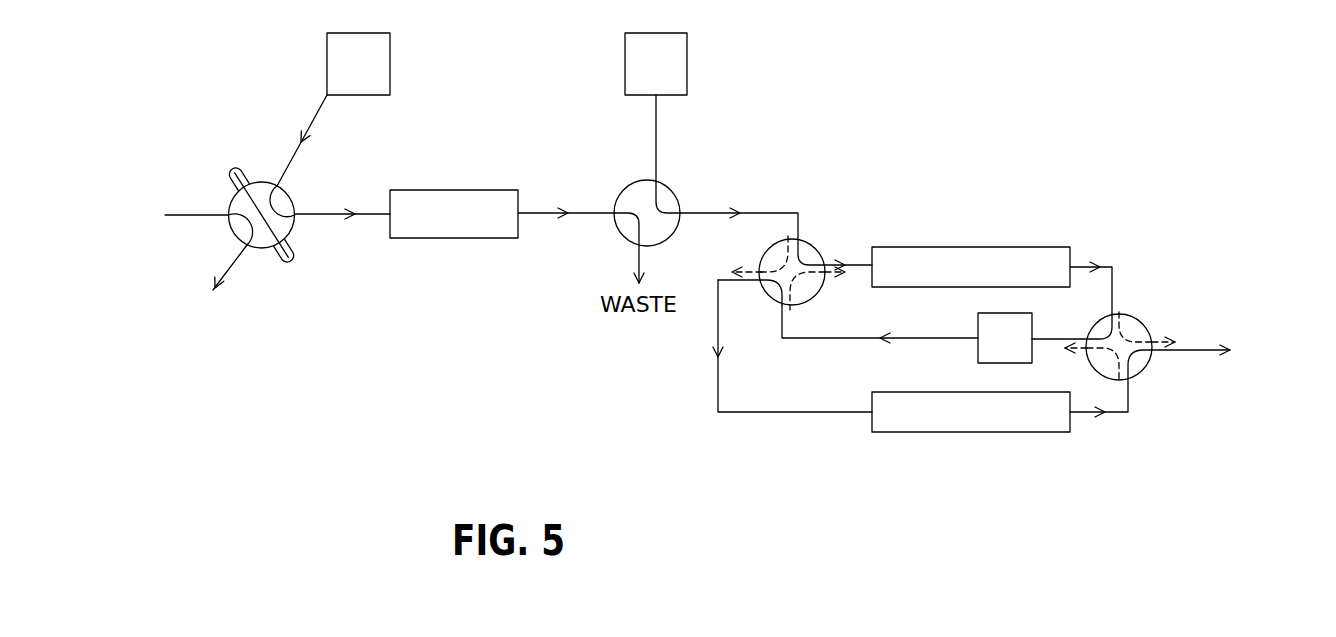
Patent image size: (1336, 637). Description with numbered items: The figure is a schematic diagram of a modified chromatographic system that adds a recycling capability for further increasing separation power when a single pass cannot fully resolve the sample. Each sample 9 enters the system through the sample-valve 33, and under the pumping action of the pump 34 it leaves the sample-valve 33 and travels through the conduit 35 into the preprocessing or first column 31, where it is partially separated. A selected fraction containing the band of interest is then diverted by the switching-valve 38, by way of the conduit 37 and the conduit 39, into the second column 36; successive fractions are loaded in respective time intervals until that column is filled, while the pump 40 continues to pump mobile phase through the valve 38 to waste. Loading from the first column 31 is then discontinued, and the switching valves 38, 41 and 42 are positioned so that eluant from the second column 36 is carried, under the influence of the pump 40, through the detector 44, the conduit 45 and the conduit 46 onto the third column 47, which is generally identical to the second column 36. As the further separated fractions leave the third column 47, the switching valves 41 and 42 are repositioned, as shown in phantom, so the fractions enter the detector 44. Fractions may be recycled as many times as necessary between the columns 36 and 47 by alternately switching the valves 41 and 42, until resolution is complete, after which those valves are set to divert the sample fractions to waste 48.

The sample 9 is at (130, 215).
The first column 31 is at (463, 190).
The sample-valve 33 is at (267, 250).
The pump 34 is at (390, 64).
The conduit 35 is at (373, 213).
The second column 36 is at (975, 247).
The conduit 37 is at (583, 212).
The switching-valve 38 is at (673, 193).
The conduit 39 is at (798, 213).
The pump 40 is at (687, 67).
The switching valve 41 is at (818, 250).
The switching valve 42 is at (1143, 323).
The detector 44 is at (978, 325).
The conduit 45 is at (827, 338).
The conduit 46 is at (782, 412).
The third column 47 is at (953, 432).
The waste 48 is at (1233, 364).